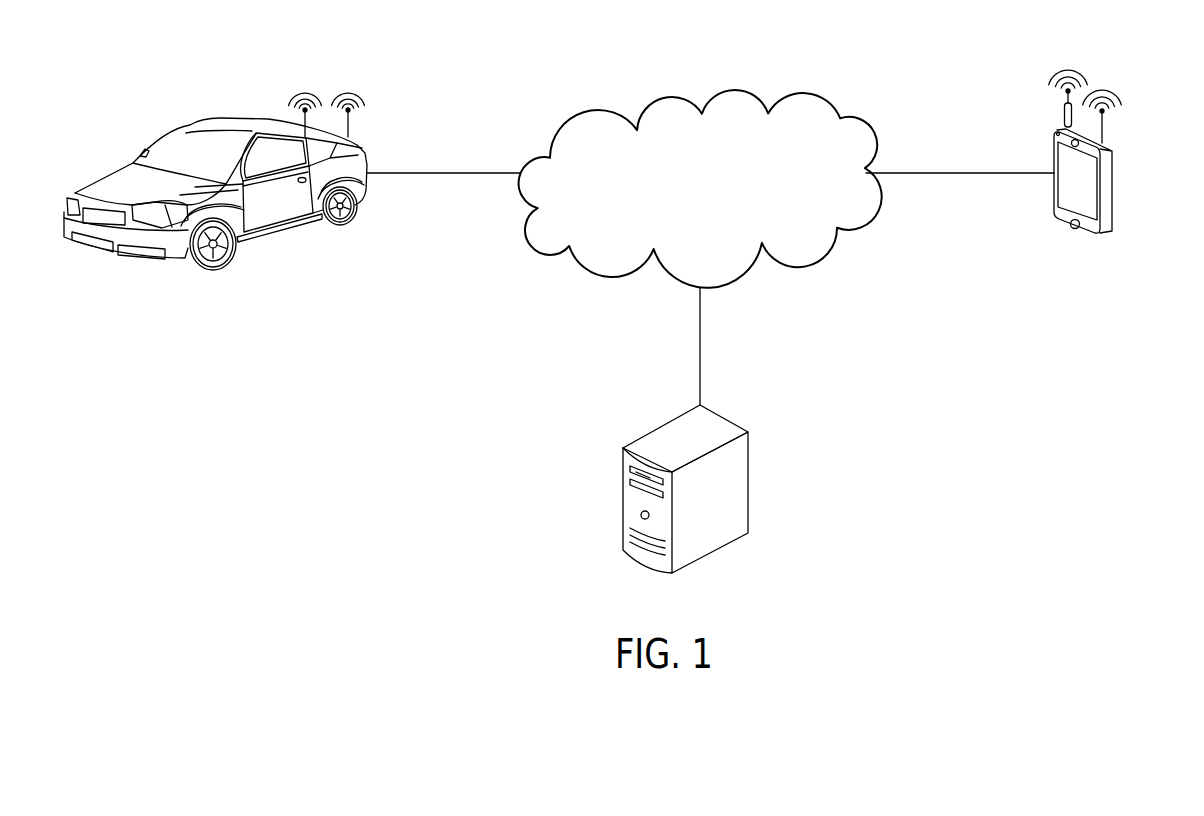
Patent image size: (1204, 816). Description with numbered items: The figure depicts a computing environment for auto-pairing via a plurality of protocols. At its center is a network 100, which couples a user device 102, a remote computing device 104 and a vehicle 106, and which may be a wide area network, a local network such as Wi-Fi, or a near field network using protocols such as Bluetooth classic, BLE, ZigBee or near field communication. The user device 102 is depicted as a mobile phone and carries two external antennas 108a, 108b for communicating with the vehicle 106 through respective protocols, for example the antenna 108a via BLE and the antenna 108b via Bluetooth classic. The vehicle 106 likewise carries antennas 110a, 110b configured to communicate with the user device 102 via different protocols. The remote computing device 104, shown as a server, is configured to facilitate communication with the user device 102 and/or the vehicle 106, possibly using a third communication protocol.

The network 100 is at (807, 92).
The user device 102 is at (1115, 190).
The remote computing device 104 is at (748, 432).
The vehicle 106 is at (281, 238).
The antenna 108a is at (1058, 72).
The antenna 108b is at (1115, 92).
The antenna 110a is at (305, 93).
The antenna 110b is at (348, 93).